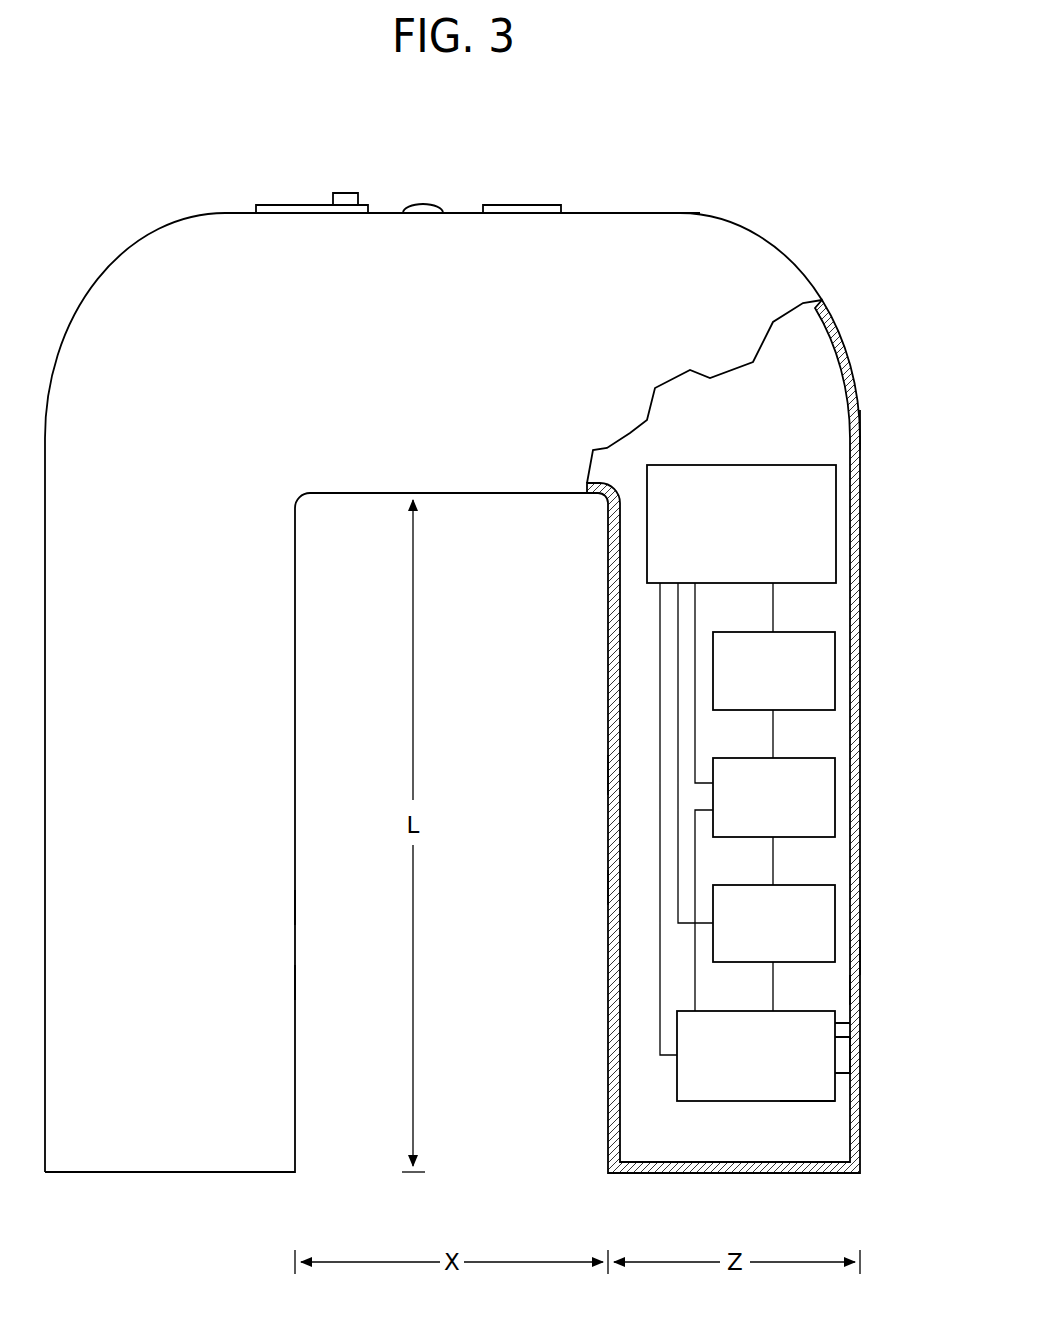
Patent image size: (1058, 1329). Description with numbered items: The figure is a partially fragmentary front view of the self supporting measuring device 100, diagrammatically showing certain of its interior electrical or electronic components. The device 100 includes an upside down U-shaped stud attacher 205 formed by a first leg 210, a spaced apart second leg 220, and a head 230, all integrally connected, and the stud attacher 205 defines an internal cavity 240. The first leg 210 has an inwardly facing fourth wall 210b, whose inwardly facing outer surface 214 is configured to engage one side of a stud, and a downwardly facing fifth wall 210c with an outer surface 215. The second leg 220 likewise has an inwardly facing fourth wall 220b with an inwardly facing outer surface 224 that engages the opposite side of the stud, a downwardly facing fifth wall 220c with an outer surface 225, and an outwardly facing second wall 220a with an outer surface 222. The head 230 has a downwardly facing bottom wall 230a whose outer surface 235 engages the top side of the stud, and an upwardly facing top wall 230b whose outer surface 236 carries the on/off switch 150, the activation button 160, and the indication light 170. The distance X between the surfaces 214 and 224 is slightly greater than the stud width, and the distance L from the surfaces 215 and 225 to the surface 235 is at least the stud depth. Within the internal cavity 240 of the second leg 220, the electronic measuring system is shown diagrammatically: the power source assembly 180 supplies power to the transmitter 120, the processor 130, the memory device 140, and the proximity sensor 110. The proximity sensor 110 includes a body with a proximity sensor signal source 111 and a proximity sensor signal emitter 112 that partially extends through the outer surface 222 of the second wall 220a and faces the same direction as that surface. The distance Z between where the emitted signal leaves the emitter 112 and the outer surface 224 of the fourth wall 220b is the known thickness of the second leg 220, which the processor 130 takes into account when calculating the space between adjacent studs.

The self supporting measuring device 100 is at (448, 655).
The proximity sensor 110 is at (852, 1026).
The proximity sensor signal source 111 is at (815, 1088).
The proximity sensor signal emitter 112 is at (853, 1053).
The transmitter 120 is at (836, 670).
The processor 130 is at (836, 798).
The memory device 140 is at (836, 923).
The on/off switch 150 is at (296, 205).
The activation button 160 is at (525, 205).
The indication light 170 is at (423, 205).
The power source assembly 180 is at (837, 526).
The stud attacher 205 is at (862, 432).
The first leg 210 is at (117, 1180).
The inwardly facing fourth wall of first leg 210b is at (296, 982).
The downwardly facing fifth wall of first leg 210c is at (248, 1173).
The inwardly facing outer surface of fourth wall of first leg 214 is at (296, 907).
The outer surface of fifth wall of first leg 215 is at (171, 1173).
The second leg 220 is at (700, 1180).
The outwardly facing second wall of second leg 220a is at (862, 958).
The inwardly facing fourth wall of second leg 220b is at (607, 885).
The downwardly facing fifth wall of second leg 220c is at (820, 1174).
The outer surface of second wall of second leg 222 is at (862, 990).
The inwardly facing outer surface of fourth wall of second leg 224 is at (607, 775).
The outer surface of fifth wall of second leg 225 is at (742, 1174).
The head 230 is at (158, 218).
The downwardly facing fifth or bottom wall of head 230a is at (532, 494).
The upwardly facing sixth or top wall of head 230b is at (682, 213).
The outer surface of fifth wall of head 235 is at (450, 494).
The outer surface of top wall of head 236 is at (612, 213).
The internal cavity 240 is at (822, 378).